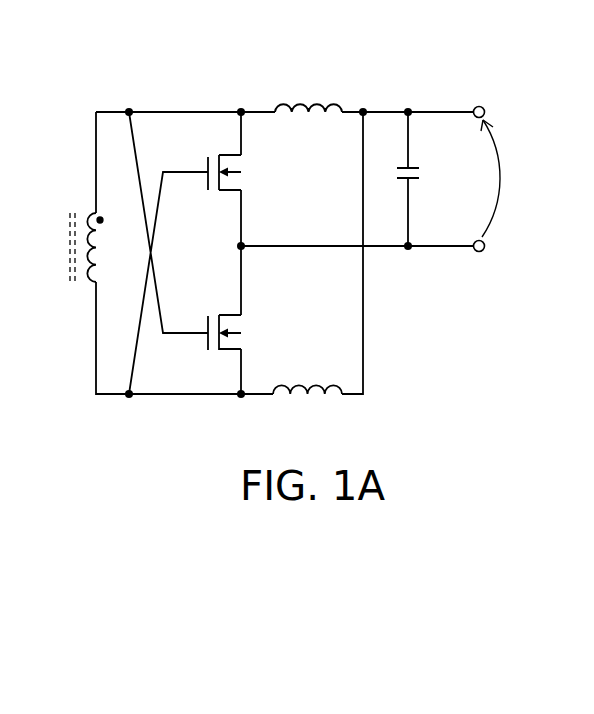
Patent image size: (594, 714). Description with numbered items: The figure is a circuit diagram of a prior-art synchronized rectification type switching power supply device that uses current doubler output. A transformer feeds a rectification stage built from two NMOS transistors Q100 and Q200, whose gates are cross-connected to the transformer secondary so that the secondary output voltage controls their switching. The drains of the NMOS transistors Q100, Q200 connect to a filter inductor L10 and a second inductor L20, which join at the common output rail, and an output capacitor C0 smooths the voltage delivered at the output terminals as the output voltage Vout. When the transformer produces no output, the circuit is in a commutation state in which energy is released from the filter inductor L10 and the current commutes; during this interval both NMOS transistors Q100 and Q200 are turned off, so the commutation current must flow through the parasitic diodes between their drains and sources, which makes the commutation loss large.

The NMOS transistor Q100 is at (256, 172).
The NMOS transistor Q200 is at (256, 332).
The filter inductor L10 is at (308, 93).
The second output inductor L20 is at (307, 375).
The output capacitor C0 is at (424, 179).
The output voltage Vout is at (522, 178).